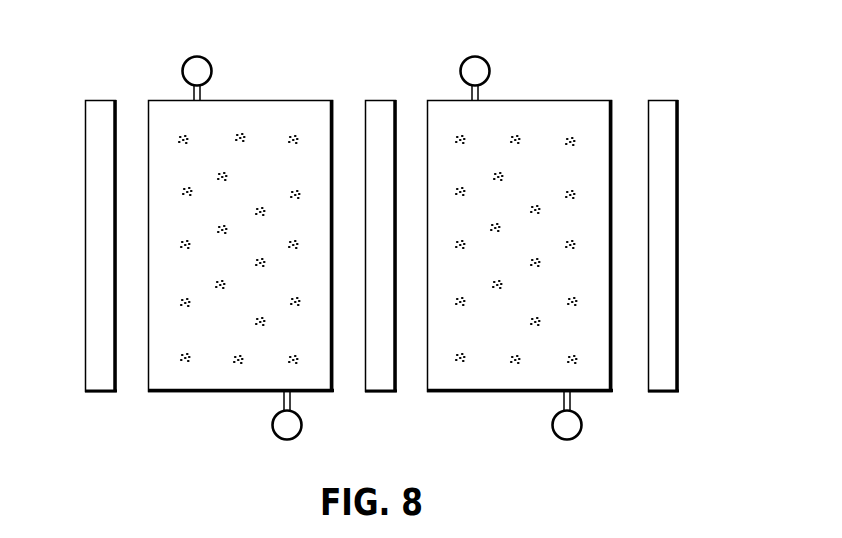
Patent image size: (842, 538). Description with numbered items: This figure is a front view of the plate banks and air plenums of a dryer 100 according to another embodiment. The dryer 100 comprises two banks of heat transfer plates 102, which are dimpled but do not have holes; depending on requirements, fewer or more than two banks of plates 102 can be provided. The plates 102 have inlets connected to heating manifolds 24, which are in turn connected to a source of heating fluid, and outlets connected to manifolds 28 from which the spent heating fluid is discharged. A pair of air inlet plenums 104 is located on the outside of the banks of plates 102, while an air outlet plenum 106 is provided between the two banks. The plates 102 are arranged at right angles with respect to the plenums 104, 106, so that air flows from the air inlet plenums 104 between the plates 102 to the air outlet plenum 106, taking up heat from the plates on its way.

The dryer 100 is at (78, 75).
The heat transfer plates 102 is at (562, 118).
The air inlet plenums 104 is at (97, 372).
The air outlet plenum 106 is at (379, 127).
The heating manifolds 24 is at (203, 70).
The manifolds 28 is at (276, 428).